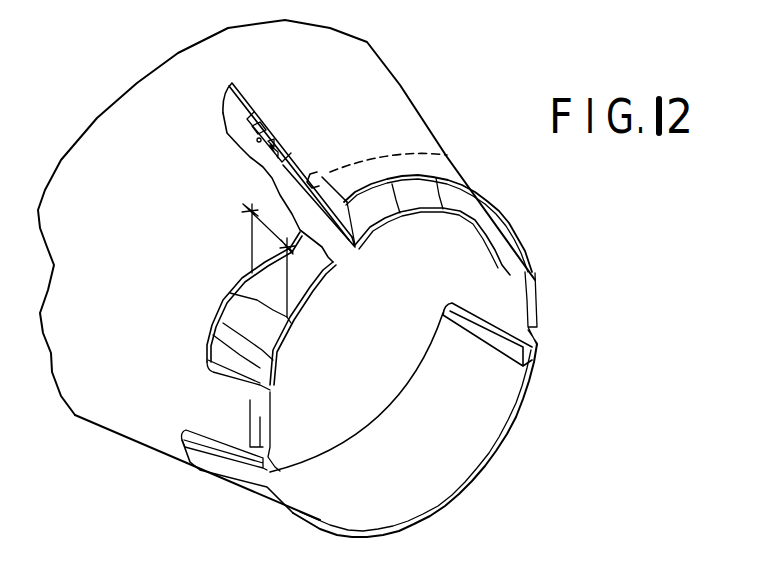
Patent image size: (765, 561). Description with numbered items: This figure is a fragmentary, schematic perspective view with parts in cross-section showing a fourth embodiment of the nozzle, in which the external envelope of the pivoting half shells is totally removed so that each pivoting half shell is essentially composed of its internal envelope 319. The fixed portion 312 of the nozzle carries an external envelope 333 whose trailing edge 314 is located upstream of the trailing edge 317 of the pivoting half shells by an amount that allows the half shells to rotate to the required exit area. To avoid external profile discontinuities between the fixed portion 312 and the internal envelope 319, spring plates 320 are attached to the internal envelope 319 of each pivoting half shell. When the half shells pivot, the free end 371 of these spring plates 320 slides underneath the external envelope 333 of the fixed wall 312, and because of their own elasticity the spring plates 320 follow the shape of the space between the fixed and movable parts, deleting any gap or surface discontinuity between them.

The fixed portion of the nozzle 312 is at (290, 71).
The trailing edge of the external envelope 314 is at (230, 294).
The trailing edge of the pivoting half shells 317 is at (470, 481).
The internal envelope 319 is at (273, 162).
The spring plates 320 is at (473, 207).
The external envelope of the fixed portion 333 is at (441, 167).
The free end of the spring plates 371 is at (314, 173).